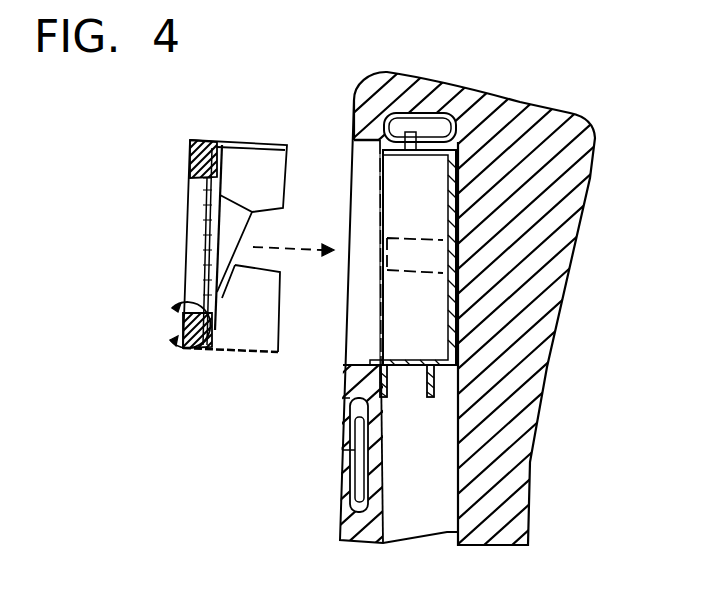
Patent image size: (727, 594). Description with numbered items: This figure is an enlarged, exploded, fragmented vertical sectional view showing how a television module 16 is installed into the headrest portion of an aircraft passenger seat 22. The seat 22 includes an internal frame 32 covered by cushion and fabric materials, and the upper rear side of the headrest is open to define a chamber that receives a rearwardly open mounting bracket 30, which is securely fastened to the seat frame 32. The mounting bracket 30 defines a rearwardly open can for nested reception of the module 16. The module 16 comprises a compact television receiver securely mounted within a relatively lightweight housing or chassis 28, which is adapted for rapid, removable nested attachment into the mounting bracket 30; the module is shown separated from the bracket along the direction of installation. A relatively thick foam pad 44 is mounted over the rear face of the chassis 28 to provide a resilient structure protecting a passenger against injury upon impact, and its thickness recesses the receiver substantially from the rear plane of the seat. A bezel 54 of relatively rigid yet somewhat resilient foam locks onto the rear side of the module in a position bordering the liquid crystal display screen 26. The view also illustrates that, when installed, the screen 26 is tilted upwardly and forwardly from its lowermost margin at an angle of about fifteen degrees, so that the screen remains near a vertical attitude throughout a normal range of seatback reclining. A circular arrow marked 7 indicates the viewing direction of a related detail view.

The television module 16 is at (224, 200).
The foam pad 44 is at (203, 145).
The bezel 54 is at (193, 177).
The liquid crystal display screen 26 is at (233, 227).
The housing or chassis 28 is at (240, 353).
The seat frame 32 is at (412, 120).
The mounting bracket 30 is at (450, 212).
The aircraft passenger seat 22 is at (548, 363).
The view direction indicator 7 is at (185, 325).